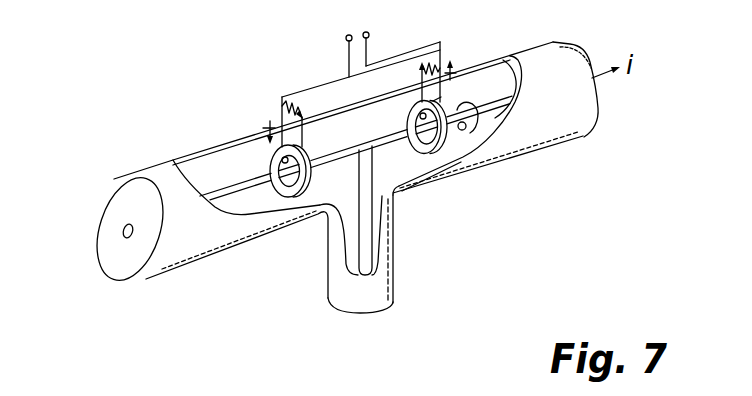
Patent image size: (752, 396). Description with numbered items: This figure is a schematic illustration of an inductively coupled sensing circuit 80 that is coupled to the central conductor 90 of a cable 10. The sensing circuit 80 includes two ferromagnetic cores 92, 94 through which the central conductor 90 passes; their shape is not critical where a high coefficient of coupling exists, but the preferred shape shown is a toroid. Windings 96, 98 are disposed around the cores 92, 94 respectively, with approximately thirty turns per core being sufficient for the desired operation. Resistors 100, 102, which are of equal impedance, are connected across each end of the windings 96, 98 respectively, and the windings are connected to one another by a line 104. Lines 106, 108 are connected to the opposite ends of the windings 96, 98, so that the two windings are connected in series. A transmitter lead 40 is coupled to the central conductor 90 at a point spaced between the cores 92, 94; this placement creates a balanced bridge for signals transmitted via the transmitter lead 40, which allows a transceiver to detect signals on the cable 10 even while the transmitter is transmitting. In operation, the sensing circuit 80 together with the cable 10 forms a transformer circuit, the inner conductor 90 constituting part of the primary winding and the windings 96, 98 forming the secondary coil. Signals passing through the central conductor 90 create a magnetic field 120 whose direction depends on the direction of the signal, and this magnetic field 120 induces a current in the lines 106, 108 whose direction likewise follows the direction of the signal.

The cable 10 is at (171, 276).
The transmitter lead 40 is at (364, 262).
The sensing circuit 80 is at (547, 168).
The central conductor 90 is at (521, 85).
The ferromagnetic core 92 is at (309, 185).
The ferromagnetic core 94 is at (422, 153).
The winding 96 is at (304, 140).
The winding 98 is at (441, 96).
The resistor 100 is at (282, 106).
The resistor 102 is at (441, 60).
The line 104 is at (371, 91).
The line 106 is at (345, 38).
The line 108 is at (370, 33).
The magnetic field 120 is at (480, 125).